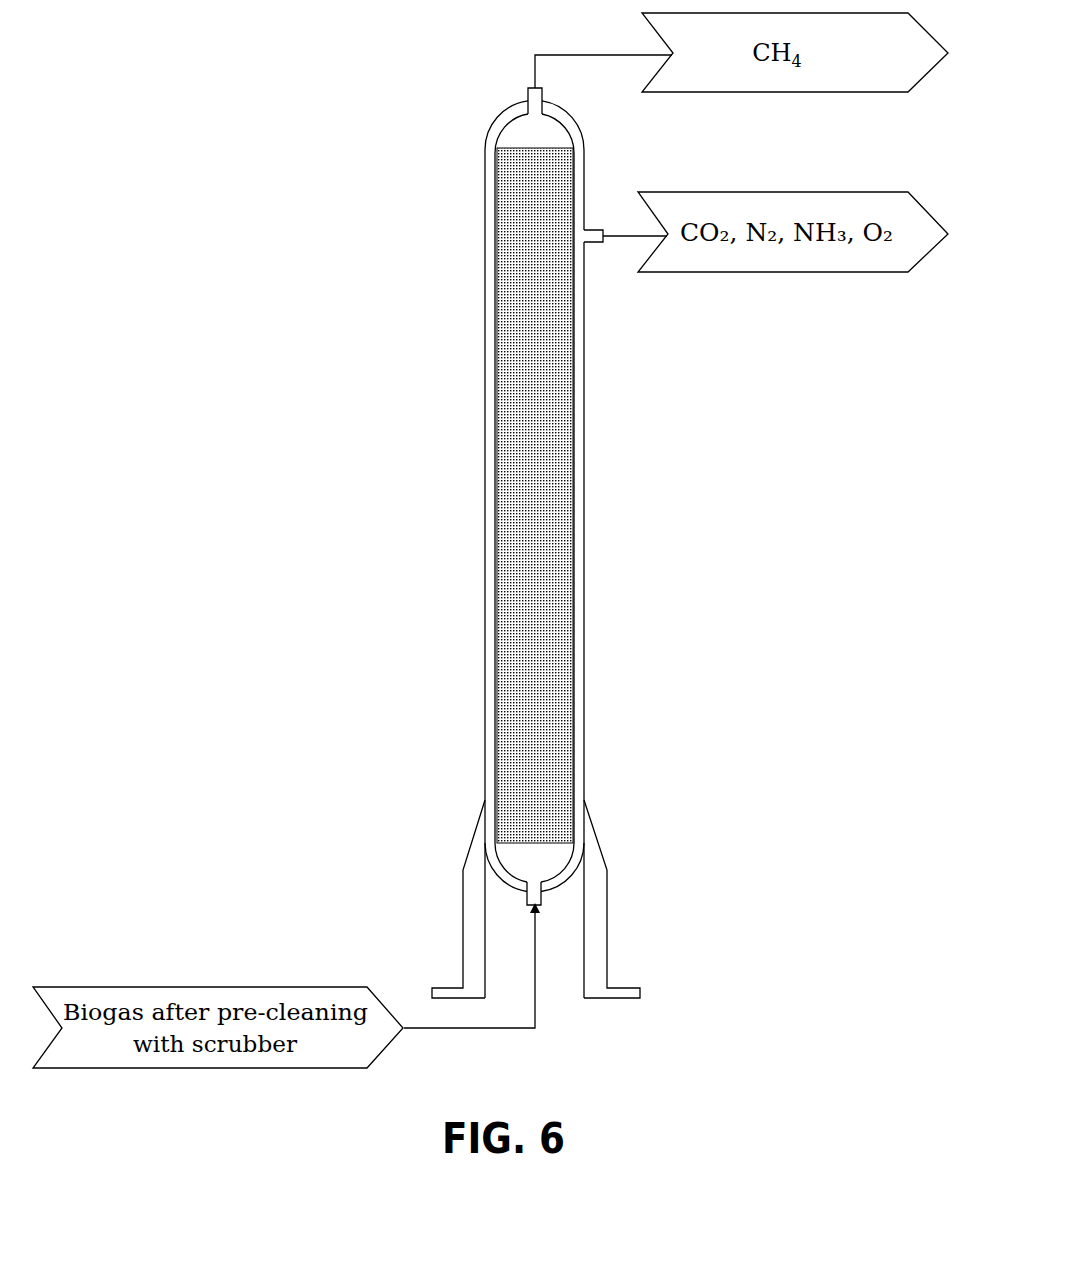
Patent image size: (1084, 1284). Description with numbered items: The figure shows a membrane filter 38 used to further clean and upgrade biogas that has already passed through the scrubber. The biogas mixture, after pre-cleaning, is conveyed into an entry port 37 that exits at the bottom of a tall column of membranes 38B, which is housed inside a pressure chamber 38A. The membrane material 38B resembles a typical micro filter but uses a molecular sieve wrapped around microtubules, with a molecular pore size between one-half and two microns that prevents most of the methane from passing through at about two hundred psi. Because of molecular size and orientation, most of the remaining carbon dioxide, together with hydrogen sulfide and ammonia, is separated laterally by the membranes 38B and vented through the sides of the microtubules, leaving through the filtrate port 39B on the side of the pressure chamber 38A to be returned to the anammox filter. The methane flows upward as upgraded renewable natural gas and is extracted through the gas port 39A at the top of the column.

The entry port 37 is at (543, 897).
The membrane filter 38 is at (336, 367).
The pressure chamber 38A is at (485, 575).
The column of membranes 38B is at (552, 512).
The gas port 39A is at (528, 90).
The filtrate port 39B is at (593, 242).